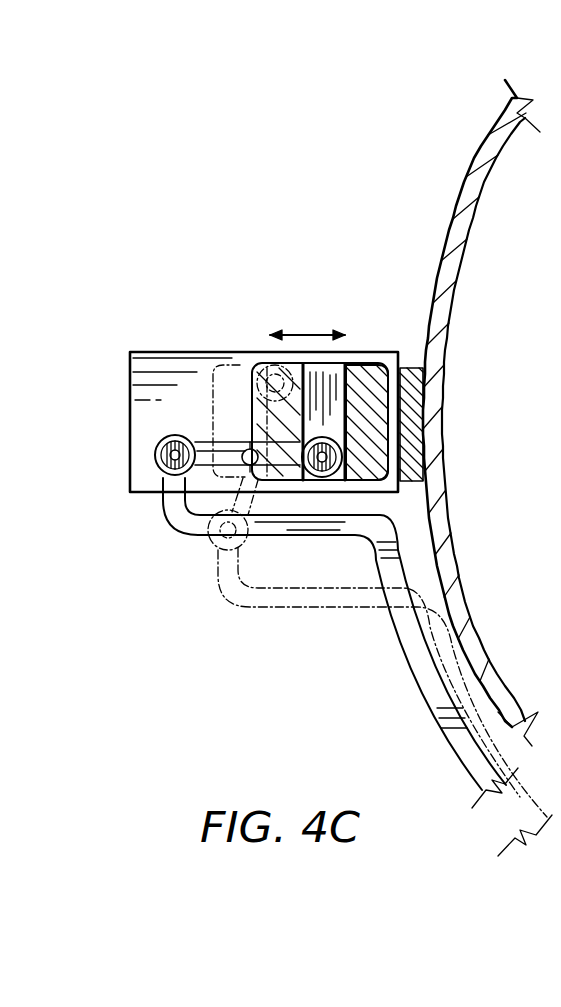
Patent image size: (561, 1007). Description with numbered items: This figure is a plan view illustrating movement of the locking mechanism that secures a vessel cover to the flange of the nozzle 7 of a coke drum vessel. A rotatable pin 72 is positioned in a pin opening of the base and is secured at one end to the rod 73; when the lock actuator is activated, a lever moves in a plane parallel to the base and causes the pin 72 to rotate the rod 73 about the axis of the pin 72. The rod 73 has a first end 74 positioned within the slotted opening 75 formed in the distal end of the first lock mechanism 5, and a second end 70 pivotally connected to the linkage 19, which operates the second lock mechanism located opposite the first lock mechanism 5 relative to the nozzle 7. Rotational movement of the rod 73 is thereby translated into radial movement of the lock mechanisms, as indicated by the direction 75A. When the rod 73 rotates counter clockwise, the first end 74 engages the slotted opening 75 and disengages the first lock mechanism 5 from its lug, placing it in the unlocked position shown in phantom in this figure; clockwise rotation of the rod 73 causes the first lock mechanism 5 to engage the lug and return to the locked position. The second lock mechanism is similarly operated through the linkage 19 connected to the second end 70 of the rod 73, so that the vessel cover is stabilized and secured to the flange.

The first lock mechanism 5 is at (369, 367).
The nozzle 7 is at (446, 228).
The linkage 19 is at (396, 628).
The second end 70 is at (155, 467).
The rotatable pin 72 is at (242, 450).
The rod 73 is at (195, 440).
The first end 74 is at (338, 478).
The slotted opening 75 is at (323, 352).
The direction 75A is at (307, 324).